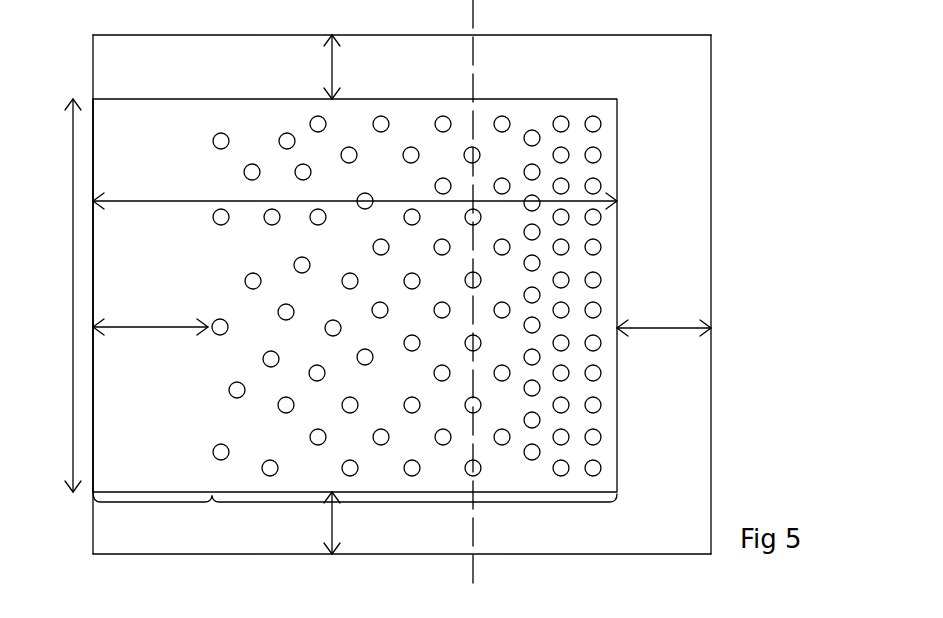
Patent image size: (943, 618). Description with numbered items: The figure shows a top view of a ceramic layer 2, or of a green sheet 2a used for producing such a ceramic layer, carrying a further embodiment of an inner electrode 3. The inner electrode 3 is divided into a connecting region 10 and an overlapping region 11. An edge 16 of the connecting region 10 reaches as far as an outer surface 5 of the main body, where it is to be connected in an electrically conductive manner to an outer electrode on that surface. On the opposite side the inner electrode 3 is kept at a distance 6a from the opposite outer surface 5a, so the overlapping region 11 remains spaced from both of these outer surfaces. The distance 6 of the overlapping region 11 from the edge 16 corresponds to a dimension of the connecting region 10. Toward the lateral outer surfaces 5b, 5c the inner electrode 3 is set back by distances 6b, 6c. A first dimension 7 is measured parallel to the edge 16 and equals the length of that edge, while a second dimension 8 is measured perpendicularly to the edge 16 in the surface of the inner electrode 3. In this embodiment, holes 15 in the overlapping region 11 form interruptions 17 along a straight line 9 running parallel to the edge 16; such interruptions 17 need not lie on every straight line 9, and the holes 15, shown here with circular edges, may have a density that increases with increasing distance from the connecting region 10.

The ceramic layer 2 is at (414, 299).
The green sheet 2a is at (414, 299).
The inner electrode 3 is at (355, 274).
The outer surface 5 is at (414, 299).
The outer surface 5a is at (714, 115).
The lateral outer surface 5b is at (233, 556).
The lateral outer surface 5c is at (387, 35).
The distance 6 is at (157, 320).
The distance 6a is at (667, 326).
The distance 6b is at (326, 526).
The distance 6c is at (320, 74).
The first dimension 7 is at (72, 262).
The second dimension 8 is at (162, 202).
The straight line 9 is at (477, 565).
The connecting region 10 is at (152, 507).
The overlapping region 11 is at (405, 503).
The holes 15 is at (598, 125).
The edge 16 is at (97, 243).
The interruptions 17 is at (473, 280).